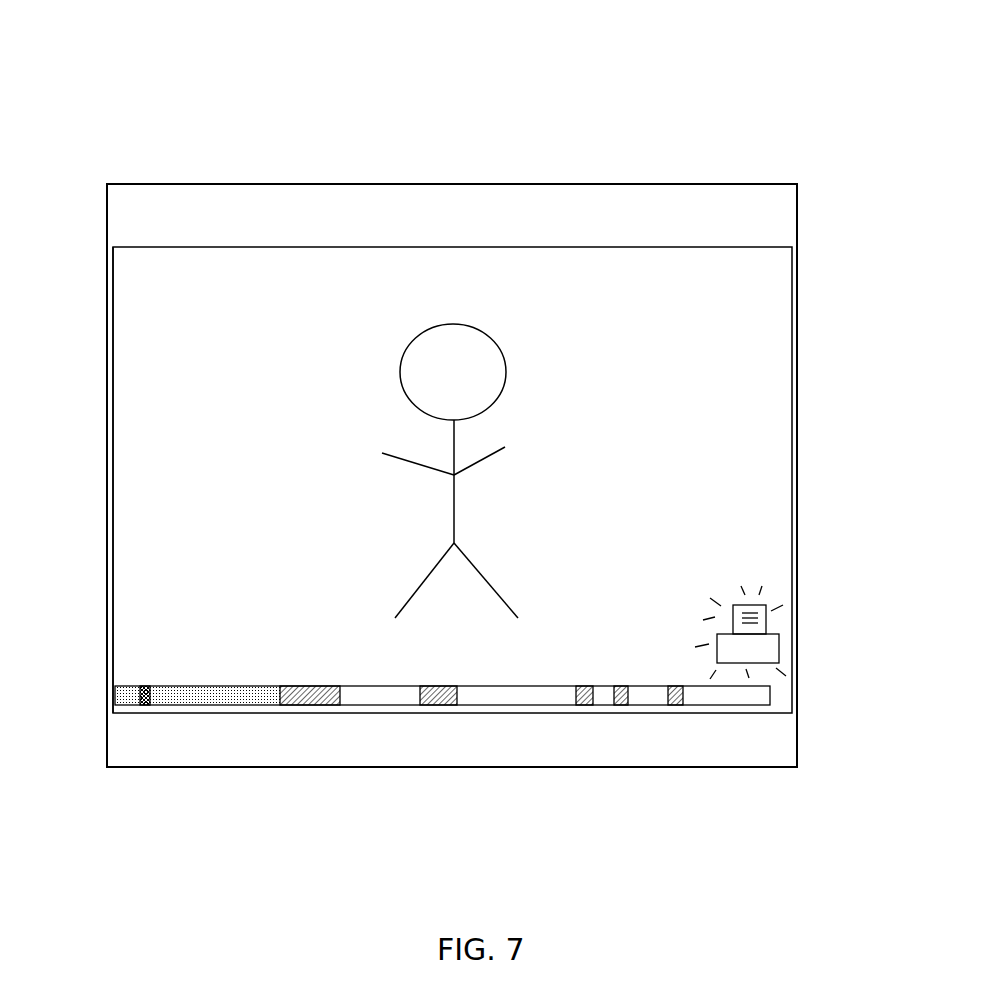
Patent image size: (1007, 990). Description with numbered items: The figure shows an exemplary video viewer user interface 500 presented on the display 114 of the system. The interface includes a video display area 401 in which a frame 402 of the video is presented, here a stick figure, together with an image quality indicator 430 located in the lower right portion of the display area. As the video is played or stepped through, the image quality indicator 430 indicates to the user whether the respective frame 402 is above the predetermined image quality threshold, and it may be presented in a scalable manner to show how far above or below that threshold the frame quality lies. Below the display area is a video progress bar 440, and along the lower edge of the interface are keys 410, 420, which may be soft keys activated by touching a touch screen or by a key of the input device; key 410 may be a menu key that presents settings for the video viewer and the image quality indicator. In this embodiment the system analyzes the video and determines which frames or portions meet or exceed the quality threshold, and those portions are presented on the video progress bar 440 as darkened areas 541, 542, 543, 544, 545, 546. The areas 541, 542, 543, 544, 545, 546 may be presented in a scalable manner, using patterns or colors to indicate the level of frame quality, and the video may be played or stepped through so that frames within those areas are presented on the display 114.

The display 114 is at (176, 157).
The video display area 401 is at (718, 378).
The frame 402 is at (193, 363).
The user interface 500 is at (600, 280).
The image quality indicator 430 is at (786, 618).
The video progress bar 440 is at (235, 718).
The darkened area 541 is at (140, 686).
The darkened area 542 is at (313, 706).
The darkened area 543 is at (436, 706).
The darkened area 544 is at (583, 707).
The darkened area 545 is at (621, 707).
The darkened area 546 is at (676, 707).
The key 410 is at (138, 752).
The key 420 is at (755, 752).